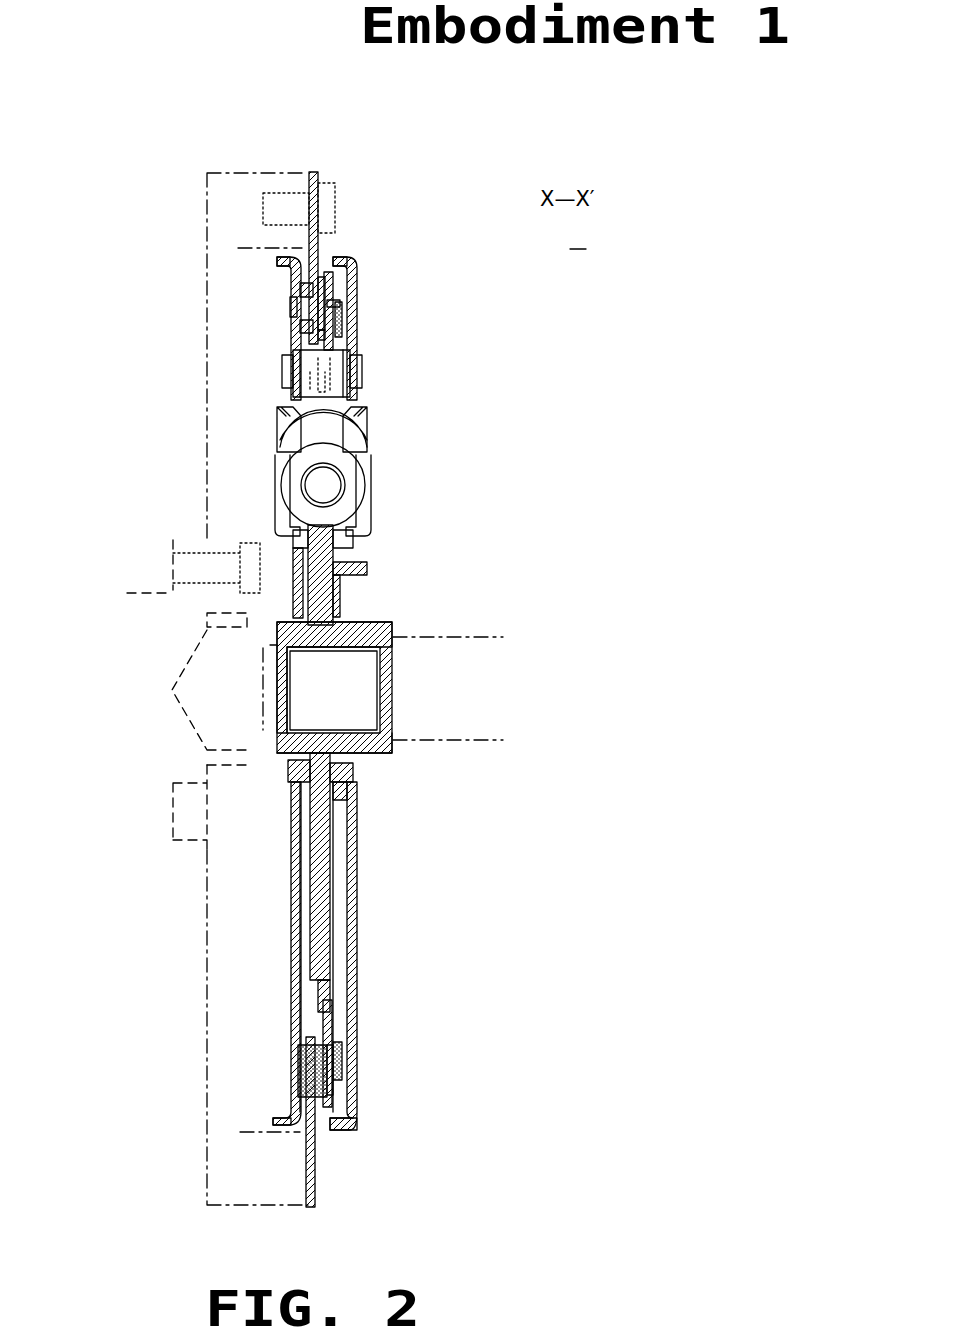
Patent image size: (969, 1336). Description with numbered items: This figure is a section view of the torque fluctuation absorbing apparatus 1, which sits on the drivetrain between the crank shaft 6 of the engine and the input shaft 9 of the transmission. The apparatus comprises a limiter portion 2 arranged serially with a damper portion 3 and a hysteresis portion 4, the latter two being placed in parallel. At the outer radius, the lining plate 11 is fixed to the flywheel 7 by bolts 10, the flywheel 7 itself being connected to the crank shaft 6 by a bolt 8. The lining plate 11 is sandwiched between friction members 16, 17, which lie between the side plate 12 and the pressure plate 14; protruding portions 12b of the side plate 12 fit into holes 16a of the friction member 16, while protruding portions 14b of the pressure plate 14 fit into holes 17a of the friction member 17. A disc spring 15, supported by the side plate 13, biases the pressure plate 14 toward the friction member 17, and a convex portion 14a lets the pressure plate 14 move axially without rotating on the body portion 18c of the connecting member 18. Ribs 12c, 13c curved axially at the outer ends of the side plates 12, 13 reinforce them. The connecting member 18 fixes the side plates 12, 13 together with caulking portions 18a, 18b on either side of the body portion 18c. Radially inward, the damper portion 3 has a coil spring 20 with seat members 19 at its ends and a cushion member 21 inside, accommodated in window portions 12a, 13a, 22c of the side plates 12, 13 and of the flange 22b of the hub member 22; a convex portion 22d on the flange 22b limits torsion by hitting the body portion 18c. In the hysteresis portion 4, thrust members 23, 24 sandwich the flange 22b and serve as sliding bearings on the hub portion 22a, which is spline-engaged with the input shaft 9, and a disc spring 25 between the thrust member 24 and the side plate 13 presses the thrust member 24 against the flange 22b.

The torque fluctuation absorbing apparatus 1 is at (578, 238).
The limiter portion 2 is at (388, 294).
The damper portion 3 is at (396, 478).
The hysteresis portion 4 is at (386, 600).
The crank shaft 6 is at (140, 595).
The flywheel 7 is at (207, 206).
The bolt 8 is at (185, 540).
The input shaft 9 is at (496, 642).
The bolt 10 is at (336, 195).
The lining plate 11 is at (318, 175).
The side plate 12 is at (288, 407).
The window portion 12a is at (281, 438).
The protruding portion 12b is at (293, 305).
The rib 12c is at (280, 262).
The side plate 13 is at (355, 405).
The window portion 13a is at (358, 430).
The rib 13c is at (345, 258).
The pressure plate 14 is at (332, 282).
The convex portion 14a is at (330, 1015).
The protruding portion 14b is at (339, 306).
The disc spring 15 is at (340, 325).
The friction member 16 is at (303, 290).
The hole 16a is at (307, 326).
The friction member 17 is at (321, 285).
The hole 17a is at (320, 335).
The connecting member 18 is at (298, 378).
The caulking portion 18a is at (286, 368).
The caulking portion 18b is at (357, 372).
The body portion 18c is at (340, 367).
The seat member 19 is at (277, 480).
The coil spring 20 is at (358, 470).
The cushion member 21 is at (323, 490).
The hub member 22 is at (388, 625).
The hub portion 22a is at (285, 630).
The flange 22b is at (300, 540).
The window portion 22c is at (345, 545).
The convex portion 22d is at (315, 1000).
The thrust member 23 is at (290, 607).
The thrust member 24 is at (355, 565).
The disc spring 25 is at (340, 600).